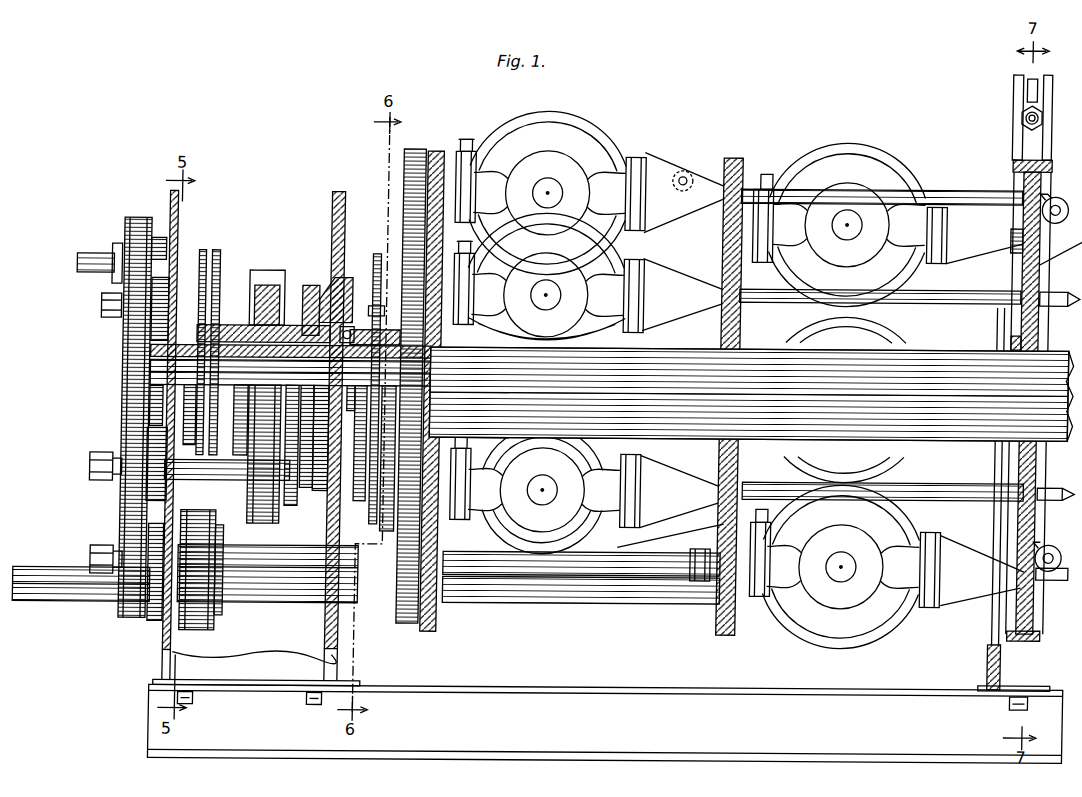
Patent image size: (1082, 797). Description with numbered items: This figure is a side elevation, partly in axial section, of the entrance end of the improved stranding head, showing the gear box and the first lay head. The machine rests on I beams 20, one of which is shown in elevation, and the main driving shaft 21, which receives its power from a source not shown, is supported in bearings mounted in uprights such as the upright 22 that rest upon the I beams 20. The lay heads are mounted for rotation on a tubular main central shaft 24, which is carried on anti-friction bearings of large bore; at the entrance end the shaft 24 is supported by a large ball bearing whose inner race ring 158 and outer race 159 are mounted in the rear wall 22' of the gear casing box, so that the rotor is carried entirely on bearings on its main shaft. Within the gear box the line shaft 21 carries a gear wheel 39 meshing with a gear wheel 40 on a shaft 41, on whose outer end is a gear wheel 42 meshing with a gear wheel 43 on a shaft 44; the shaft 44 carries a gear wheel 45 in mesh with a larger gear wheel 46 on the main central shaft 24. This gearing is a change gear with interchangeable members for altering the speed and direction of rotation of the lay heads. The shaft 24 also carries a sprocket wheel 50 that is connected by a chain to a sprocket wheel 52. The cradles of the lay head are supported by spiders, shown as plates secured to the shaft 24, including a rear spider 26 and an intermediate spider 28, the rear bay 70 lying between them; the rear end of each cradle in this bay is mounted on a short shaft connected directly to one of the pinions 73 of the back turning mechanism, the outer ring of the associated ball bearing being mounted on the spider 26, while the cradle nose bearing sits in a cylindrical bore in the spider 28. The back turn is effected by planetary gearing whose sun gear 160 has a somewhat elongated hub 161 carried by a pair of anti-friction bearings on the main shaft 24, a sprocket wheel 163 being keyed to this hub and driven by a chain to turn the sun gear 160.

The I beams 20 is at (478, 742).
The main driving shaft 21 is at (46, 602).
The upright 22 is at (150, 434).
The rear wall of the gear casing box 22' is at (312, 435).
The main central shaft 24 is at (751, 394).
The rear spider 26 is at (433, 152).
The spider 28 is at (731, 157).
The gear wheel 39 is at (205, 624).
The gear wheel 40 is at (199, 514).
The shaft 41 is at (283, 549).
The gear wheel 42 is at (114, 620).
The gear wheel 43 is at (112, 507).
The shaft 44 is at (90, 469).
The gear wheel 45 is at (247, 522).
The gear wheel 46 is at (260, 274).
The sprocket wheel 50 is at (187, 446).
The sprocket wheel 52 is at (211, 254).
The rear bay 70 is at (667, 168).
The pinion 73 is at (416, 150).
The inner race ring 158 is at (121, 363).
The outer race 159 is at (315, 285).
The sun gear 160 is at (347, 284).
The hub 161 is at (422, 364).
The sprocket wheel 163 is at (377, 285).